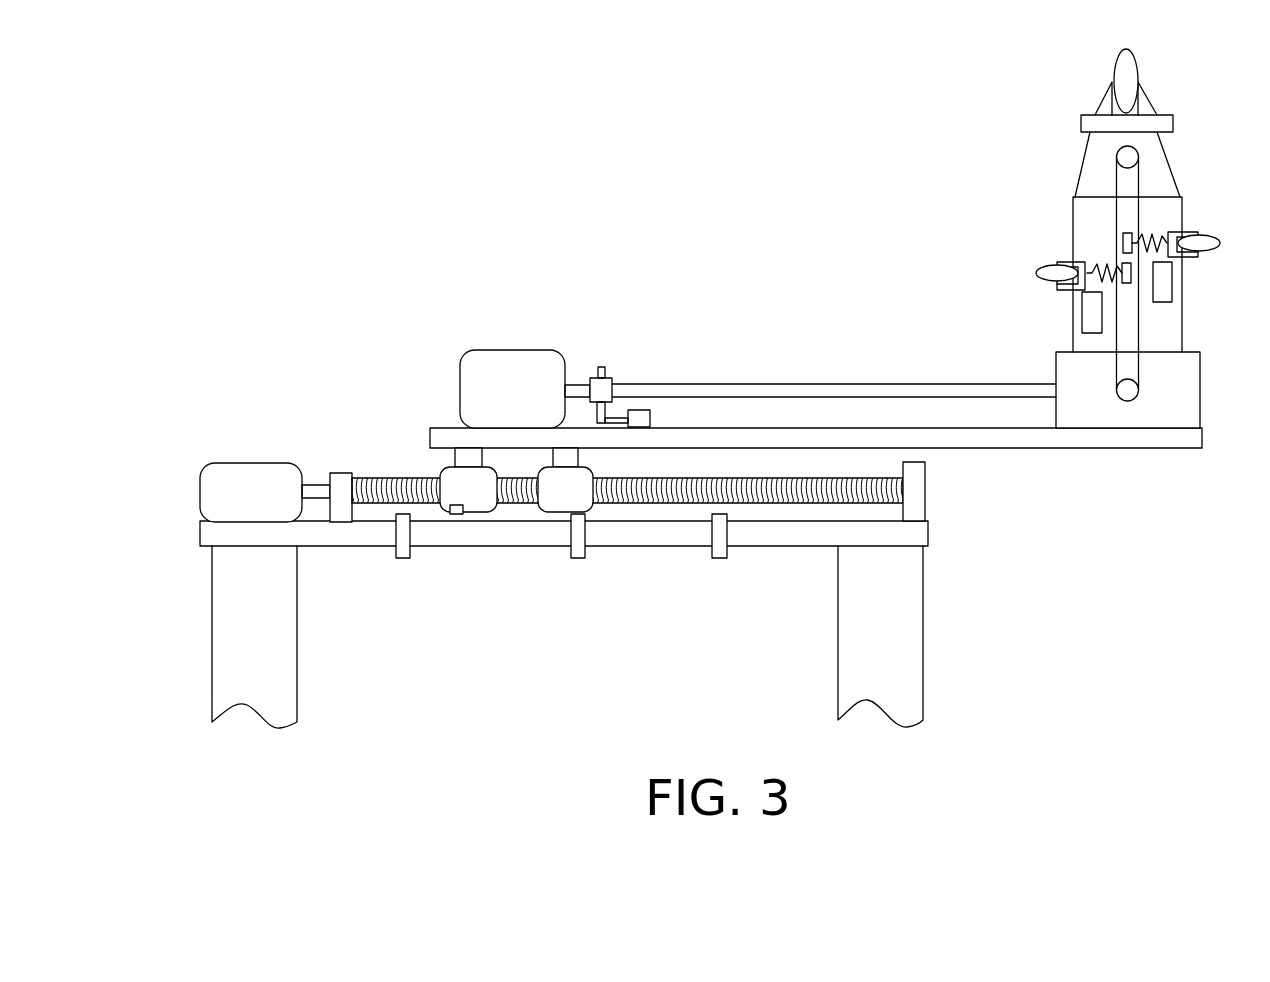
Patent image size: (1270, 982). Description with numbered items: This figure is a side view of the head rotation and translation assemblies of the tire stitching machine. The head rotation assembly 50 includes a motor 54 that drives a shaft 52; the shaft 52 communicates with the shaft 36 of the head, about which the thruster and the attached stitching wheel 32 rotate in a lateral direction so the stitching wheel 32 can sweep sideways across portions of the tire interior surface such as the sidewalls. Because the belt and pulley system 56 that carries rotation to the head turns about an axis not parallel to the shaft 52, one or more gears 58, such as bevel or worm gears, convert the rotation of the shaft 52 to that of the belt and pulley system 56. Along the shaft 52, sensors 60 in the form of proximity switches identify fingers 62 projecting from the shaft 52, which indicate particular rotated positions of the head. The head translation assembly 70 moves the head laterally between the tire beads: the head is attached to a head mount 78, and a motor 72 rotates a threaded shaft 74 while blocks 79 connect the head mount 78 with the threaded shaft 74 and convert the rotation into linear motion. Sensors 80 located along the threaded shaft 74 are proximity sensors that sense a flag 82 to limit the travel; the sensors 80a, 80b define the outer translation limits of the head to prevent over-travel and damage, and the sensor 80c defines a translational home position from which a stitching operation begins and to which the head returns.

The stitching wheel 32 is at (1125, 70).
The shaft 36 is at (1120, 155).
The head rotation assembly 50 is at (507, 320).
The shaft 52 is at (810, 383).
The motor 54 is at (545, 355).
The belt and pulley system 56 is at (1140, 332).
The gears 58 is at (1188, 380).
The sensors 60 is at (640, 410).
The fingers 62 is at (602, 367).
The head translation assembly 70 is at (248, 426).
The motor 72 is at (212, 493).
The threaded shaft 74 is at (512, 504).
The head mount 78 is at (1018, 449).
The blocks 79 is at (452, 480).
The sensors 80 is at (560, 579).
The sensor 80a is at (402, 558).
The sensor 80b is at (720, 558).
The sensor 80c is at (585, 553).
The flag 82 is at (456, 514).